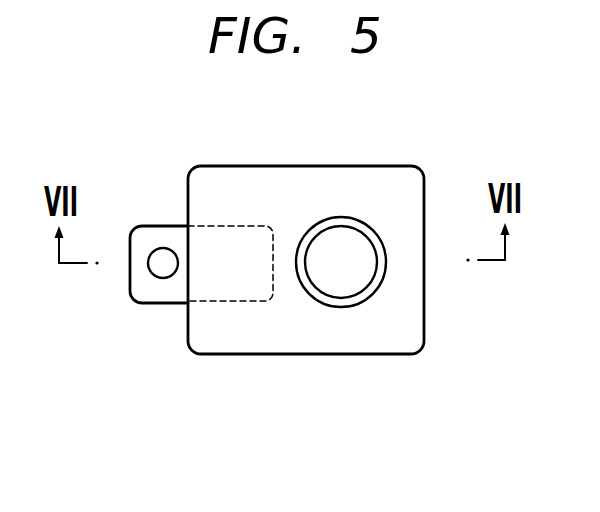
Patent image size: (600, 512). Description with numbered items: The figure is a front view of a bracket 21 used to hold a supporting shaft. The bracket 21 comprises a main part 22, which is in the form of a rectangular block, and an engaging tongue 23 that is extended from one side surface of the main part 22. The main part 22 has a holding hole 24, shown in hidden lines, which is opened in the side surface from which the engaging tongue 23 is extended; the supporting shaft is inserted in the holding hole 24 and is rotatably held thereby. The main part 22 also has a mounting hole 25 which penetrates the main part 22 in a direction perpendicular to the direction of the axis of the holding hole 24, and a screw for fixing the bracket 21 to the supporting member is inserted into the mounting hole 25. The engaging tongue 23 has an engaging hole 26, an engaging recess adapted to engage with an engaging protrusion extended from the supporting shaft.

The bracket 21 is at (401, 146).
The main part 22 is at (394, 335).
The engaging tongue 23 is at (159, 293).
The holding hole 24 is at (225, 239).
The mounting hole 25 is at (325, 277).
The engaging hole 26 is at (162, 258).